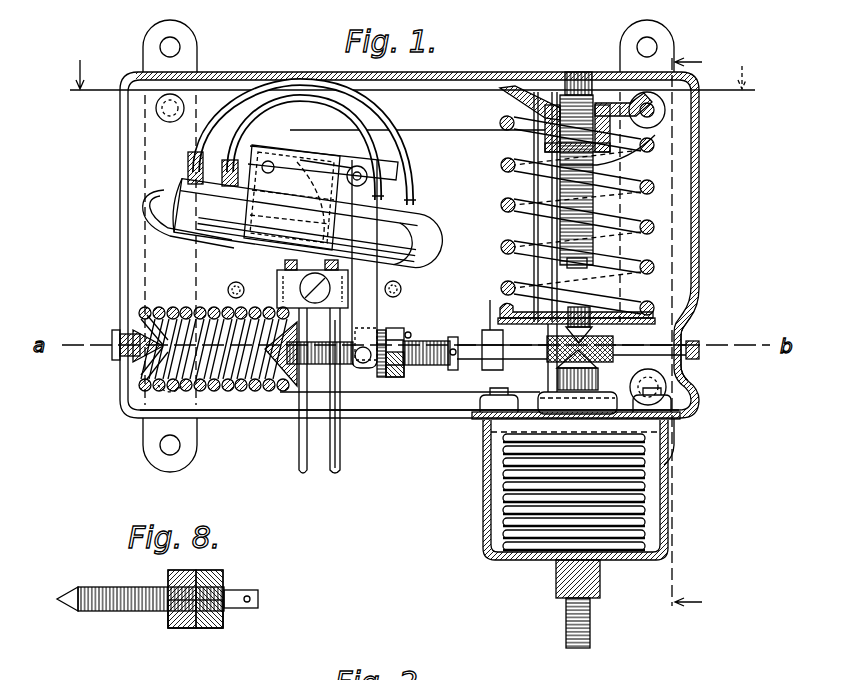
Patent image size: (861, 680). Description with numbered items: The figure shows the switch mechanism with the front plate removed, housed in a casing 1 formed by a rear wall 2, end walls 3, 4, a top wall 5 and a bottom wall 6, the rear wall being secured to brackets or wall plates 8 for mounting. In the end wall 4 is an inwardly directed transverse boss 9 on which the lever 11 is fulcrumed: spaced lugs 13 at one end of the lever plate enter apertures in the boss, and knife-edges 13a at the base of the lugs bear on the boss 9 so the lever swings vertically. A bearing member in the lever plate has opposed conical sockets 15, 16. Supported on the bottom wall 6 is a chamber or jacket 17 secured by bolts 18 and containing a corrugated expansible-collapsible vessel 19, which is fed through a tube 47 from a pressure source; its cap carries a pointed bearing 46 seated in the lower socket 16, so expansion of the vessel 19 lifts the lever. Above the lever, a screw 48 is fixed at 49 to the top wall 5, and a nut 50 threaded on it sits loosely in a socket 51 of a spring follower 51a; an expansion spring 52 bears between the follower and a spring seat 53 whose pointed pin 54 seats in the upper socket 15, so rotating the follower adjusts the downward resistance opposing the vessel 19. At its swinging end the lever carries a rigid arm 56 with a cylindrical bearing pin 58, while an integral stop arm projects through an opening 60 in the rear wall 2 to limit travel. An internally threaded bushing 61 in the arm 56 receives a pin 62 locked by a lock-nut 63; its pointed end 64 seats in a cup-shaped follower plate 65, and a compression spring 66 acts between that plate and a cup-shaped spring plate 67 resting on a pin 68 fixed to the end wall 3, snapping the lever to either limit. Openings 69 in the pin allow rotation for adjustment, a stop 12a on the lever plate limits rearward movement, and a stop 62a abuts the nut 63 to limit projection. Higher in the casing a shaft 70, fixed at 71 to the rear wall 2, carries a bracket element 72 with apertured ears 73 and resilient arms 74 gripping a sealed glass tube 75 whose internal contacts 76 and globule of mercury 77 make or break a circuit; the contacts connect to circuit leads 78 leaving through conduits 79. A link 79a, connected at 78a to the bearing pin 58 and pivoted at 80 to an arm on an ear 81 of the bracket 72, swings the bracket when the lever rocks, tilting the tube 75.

In FIG. 1, the casing 1 is at (672, 210).
In FIG. 1, the rear wall 2 is at (482, 62).
In FIG. 1, the end wall 3 is at (95, 180).
In FIG. 1, the end wall 4 is at (700, 178).
In FIG. 1, the top wall 5 is at (225, 76).
In FIG. 1, the bottom wall 6 is at (232, 420).
In FIG. 1, the brackets or wall plates 8 is at (158, 37).
In FIG. 1, the transverse boss 9 is at (692, 324).
In FIG. 1, the lever 11 is at (492, 386).
In FIG. 1, the stop 12a is at (492, 322).
In FIG. 1, the lugs 13 is at (700, 346).
In FIG. 1, the knife-edges 13a is at (696, 356).
In FIG. 1, the upper conical socket 15 is at (596, 330).
In FIG. 1, the lower conical socket 16 is at (598, 372).
In FIG. 1, the chamber or jacket 17 is at (483, 510).
In FIG. 1, the bolts 18 is at (700, 411).
In FIG. 1, the expansible-collapsible vessel 19 is at (648, 518).
In FIG. 1, the pointed bearing 46 is at (542, 393).
In FIG. 1, the tube 47 is at (592, 644).
In FIG. 1, the screw 48 is at (535, 152).
In FIG. 1, the fixed end of screw 49 is at (584, 73).
In FIG. 1, the nut 50 is at (640, 160).
In FIG. 1, the socket 51 is at (656, 134).
In FIG. 1, the spring follower 51a is at (546, 96).
In FIG. 1, the expansion spring 52 is at (656, 232).
In FIG. 1, the spring seat 53 is at (656, 320).
In FIG. 1, the pointed pin 54 is at (656, 302).
In FIG. 1, the rigid arm 56 is at (368, 378).
In FIG. 8, the rigid arm 56 is at (182, 632).
In FIG. 1, the cylindrical bearing pin 58 is at (362, 364).
In FIG. 1, the opening 60 is at (452, 337).
In FIG. 1, the internally threaded bushing 61 is at (386, 332).
In FIG. 8, the internally threaded bushing 61 is at (200, 581).
In FIG. 1, the pin 62 is at (452, 358).
In FIG. 8, the pin 62 is at (248, 604).
In FIG. 1, the stop 62a is at (409, 333).
In FIG. 1, the lock-nut 63 is at (404, 372).
In FIG. 8, the lock-nut 63 is at (224, 584).
In FIG. 1, the pointed end 64 is at (272, 332).
In FIG. 8, the pointed end 64 is at (66, 597).
In FIG. 1, the cup-shaped follower plate 65 is at (278, 392).
In FIG. 1, the compression spring 66 is at (174, 310).
In FIG. 1, the cup-shaped spring plate 67 is at (138, 326).
In FIG. 1, the pin 68 is at (128, 360).
In FIG. 1, the openings 69 is at (488, 344).
In FIG. 8, the openings 69 is at (260, 599).
In FIG. 1, the shaft 70 is at (300, 164).
In FIG. 1, the shaft fixing 71 is at (300, 186).
In FIG. 1, the bracket element 72 is at (312, 158).
In FIG. 1, the apertured ears 73 is at (340, 196).
In FIG. 1, the resilient arms 74 is at (256, 242).
In FIG. 1, the sealed glass tube 75 is at (160, 216).
In FIG. 1, the internal contacts 76 is at (198, 236).
In FIG. 1, the globule of mercury 77 is at (428, 250).
In FIG. 1, the circuit leads 78 is at (338, 96).
In FIG. 1, the link connection 78a is at (328, 440).
In FIG. 1, the conduits 79 is at (303, 474).
In FIG. 1, the link 79a is at (386, 196).
In FIG. 1, the pivot connection 80 is at (368, 176).
In FIG. 1, the ear 81 is at (362, 166).